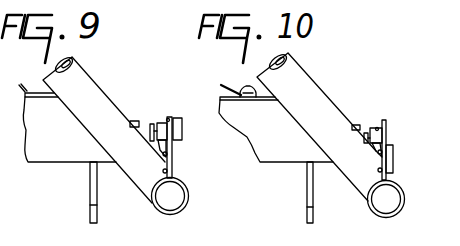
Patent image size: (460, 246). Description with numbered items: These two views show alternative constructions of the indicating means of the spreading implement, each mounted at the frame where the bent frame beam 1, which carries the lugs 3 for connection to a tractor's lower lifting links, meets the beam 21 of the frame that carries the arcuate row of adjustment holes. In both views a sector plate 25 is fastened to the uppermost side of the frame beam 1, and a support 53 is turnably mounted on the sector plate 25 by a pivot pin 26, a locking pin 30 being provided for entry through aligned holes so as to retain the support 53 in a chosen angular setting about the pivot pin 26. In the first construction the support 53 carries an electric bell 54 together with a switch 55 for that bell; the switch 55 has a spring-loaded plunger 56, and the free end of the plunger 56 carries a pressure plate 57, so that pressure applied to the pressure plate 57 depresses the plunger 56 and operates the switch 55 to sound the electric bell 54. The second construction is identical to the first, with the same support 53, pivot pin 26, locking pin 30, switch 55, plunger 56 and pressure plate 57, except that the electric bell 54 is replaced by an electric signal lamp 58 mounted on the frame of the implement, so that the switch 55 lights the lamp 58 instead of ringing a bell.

In FIG. 9, the frame beam 1 is at (152, 207).
In FIG. 10, the frame beam 1 is at (368, 207).
In FIG. 9, the lug 3 is at (90, 197).
In FIG. 10, the lug 3 is at (307, 197).
In FIG. 9, the beam 21 is at (38, 163).
In FIG. 10, the beam 21 is at (258, 163).
In FIG. 9, the sector plate 25 is at (178, 163).
In FIG. 10, the sector plate 25 is at (392, 143).
In FIG. 9, the pivot pin 26 is at (175, 178).
In FIG. 10, the pivot pin 26 is at (393, 170).
In FIG. 9, the locking pin 30 is at (177, 152).
In FIG. 10, the locking pin 30 is at (395, 158).
In FIG. 9, the support 53 is at (162, 162).
In FIG. 10, the support 53 is at (388, 123).
In FIG. 9, the electric bell 54 is at (178, 117).
In FIG. 9, the switch 55 is at (168, 118).
In FIG. 10, the switch 55 is at (376, 127).
In FIG. 9, the spring-loaded plunger 56 is at (157, 124).
In FIG. 10, the spring-loaded plunger 56 is at (369, 138).
In FIG. 9, the pressure plate 57 is at (148, 126).
In FIG. 10, the pressure plate 57 is at (368, 130).
In FIG. 10, the electric signal lamp 58 is at (247, 89).